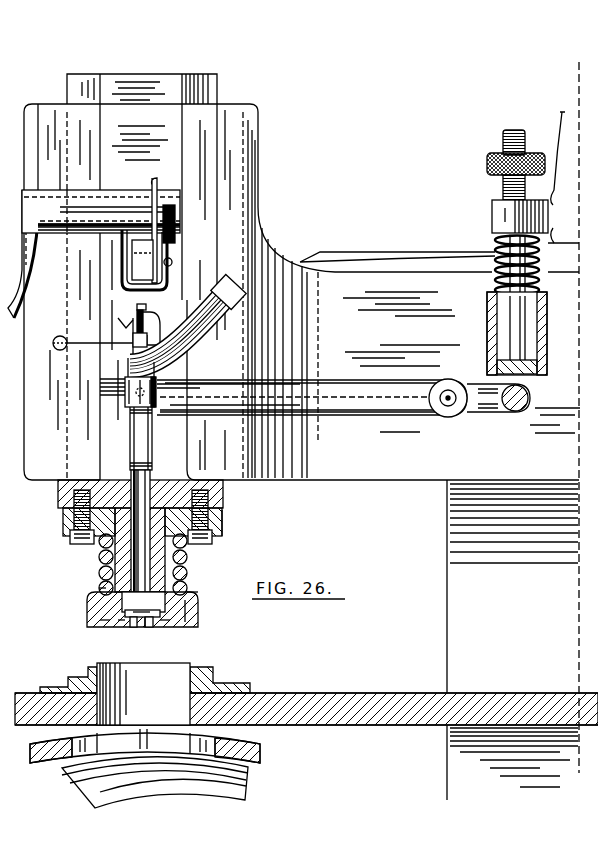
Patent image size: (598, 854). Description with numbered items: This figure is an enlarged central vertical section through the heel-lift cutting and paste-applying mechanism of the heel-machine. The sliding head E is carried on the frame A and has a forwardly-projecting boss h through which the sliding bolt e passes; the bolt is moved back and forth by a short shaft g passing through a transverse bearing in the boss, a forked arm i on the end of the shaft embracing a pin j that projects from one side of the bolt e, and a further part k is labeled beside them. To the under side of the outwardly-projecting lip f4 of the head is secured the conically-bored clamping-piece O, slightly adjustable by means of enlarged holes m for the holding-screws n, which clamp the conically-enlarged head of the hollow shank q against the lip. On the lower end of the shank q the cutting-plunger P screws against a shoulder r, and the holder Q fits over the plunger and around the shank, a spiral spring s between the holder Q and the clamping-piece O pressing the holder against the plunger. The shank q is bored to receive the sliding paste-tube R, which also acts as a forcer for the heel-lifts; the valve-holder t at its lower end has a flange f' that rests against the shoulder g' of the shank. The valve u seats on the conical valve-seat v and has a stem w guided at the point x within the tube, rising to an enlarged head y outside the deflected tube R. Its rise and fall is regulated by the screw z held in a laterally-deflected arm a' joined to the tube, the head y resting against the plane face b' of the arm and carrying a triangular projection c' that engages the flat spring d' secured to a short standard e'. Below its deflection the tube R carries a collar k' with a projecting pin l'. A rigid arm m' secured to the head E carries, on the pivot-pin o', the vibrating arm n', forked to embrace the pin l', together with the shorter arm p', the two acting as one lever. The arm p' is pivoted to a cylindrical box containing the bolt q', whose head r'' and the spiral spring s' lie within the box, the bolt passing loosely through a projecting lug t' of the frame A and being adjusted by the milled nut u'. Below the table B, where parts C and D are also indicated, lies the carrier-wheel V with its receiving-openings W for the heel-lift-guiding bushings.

The frame A is at (560, 620).
The sliding head E is at (127, 277).
The short shaft g is at (21, 254).
The shaft k is at (135, 499).
The forked arm i is at (164, 230).
The pin j is at (172, 261).
The sliding bolt e is at (144, 260).
The screw z is at (147, 308).
The laterally-deflected arm a' is at (157, 327).
The plane face b' is at (162, 336).
The enlarged head y is at (125, 346).
The triangular projection c' is at (123, 339).
The flat spring d' is at (100, 332).
The short standard e' is at (59, 334).
The sliding paste-tube R is at (207, 326).
The projecting pin l' is at (141, 365).
The rigid arm m' is at (274, 390).
The vibrating arm n' is at (302, 384).
The collar k' is at (153, 392).
The pivot-pin o' is at (452, 390).
The shorter arm p' is at (498, 409).
The bolt q' is at (501, 239).
The milled nut u' is at (501, 161).
The projecting lug t' is at (508, 204).
The spiral spring s is at (362, 416).
The spiral spring s' is at (524, 333).
The plate r'' is at (531, 368).
The outwardly-projecting lip f4 is at (60, 497).
The enlarged holes m is at (141, 524).
The clamping-piece O is at (222, 522).
The forwardly-projecting boss h is at (118, 512).
The holding-screws n is at (144, 525).
The stem w is at (130, 478).
The hollow shank q is at (98, 564).
The guide point x is at (99, 583).
The shoulder r is at (199, 589).
The holder Q is at (88, 612).
The shoulder g' is at (201, 612).
The cutting-plunger P is at (100, 623).
The valve-holder t is at (120, 631).
The valve u is at (79, 695).
The conical valve-seat v is at (149, 621).
The flange f' is at (168, 631).
The table B is at (352, 693).
The boss D is at (224, 688).
The cylinder C is at (196, 672).
The carrier-wheel V is at (270, 733).
The receiving-openings W is at (60, 760).